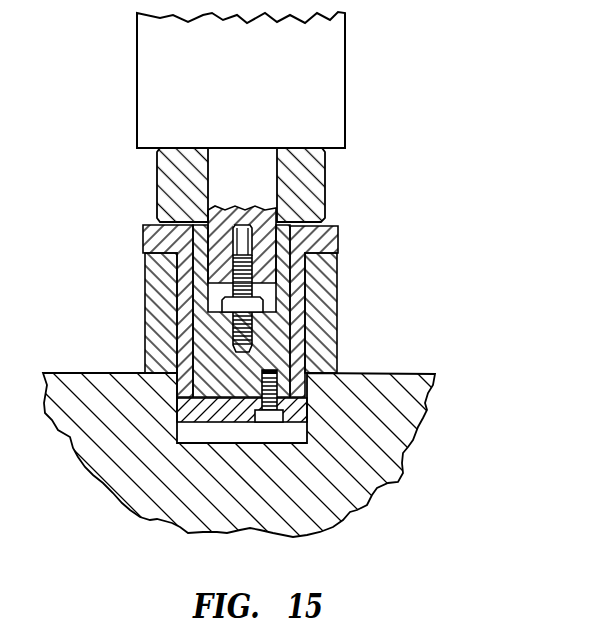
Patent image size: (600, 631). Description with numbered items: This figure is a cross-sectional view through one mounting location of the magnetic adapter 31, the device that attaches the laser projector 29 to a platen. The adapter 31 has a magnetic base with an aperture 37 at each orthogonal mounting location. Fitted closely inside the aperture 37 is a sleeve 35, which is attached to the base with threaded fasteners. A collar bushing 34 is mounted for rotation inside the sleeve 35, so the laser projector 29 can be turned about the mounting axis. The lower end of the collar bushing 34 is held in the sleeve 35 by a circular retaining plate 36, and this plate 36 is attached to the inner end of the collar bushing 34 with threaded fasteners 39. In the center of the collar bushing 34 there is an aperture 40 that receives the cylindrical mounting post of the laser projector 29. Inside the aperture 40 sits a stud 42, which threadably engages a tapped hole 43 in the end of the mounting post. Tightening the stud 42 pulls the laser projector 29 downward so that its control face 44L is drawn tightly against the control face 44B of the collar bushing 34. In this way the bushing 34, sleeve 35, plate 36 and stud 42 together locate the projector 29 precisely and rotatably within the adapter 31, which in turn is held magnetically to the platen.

The laser projector 29 is at (347, 112).
The control face of collar bushing 44B is at (308, 148).
The control face of laser emitter 44L is at (147, 150).
The aperture of collar bushing 40 is at (277, 175).
The collar bushing 34 is at (327, 195).
The sleeve 35 is at (338, 245).
The tapped hole 43 is at (233, 243).
The stud 42 is at (258, 295).
The aperture 37 is at (192, 362).
The retaining plate 36 is at (200, 423).
The threaded fastener 39 is at (270, 423).
The magnetic adapter 31 is at (415, 443).